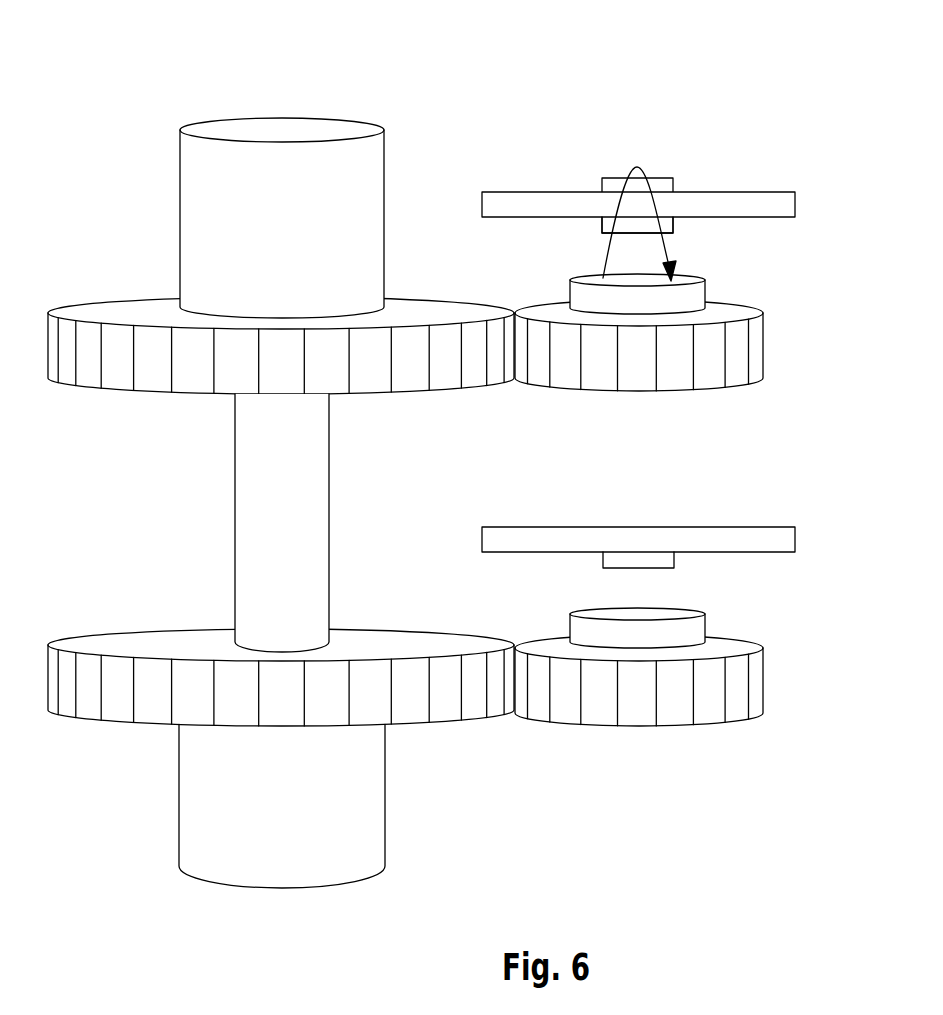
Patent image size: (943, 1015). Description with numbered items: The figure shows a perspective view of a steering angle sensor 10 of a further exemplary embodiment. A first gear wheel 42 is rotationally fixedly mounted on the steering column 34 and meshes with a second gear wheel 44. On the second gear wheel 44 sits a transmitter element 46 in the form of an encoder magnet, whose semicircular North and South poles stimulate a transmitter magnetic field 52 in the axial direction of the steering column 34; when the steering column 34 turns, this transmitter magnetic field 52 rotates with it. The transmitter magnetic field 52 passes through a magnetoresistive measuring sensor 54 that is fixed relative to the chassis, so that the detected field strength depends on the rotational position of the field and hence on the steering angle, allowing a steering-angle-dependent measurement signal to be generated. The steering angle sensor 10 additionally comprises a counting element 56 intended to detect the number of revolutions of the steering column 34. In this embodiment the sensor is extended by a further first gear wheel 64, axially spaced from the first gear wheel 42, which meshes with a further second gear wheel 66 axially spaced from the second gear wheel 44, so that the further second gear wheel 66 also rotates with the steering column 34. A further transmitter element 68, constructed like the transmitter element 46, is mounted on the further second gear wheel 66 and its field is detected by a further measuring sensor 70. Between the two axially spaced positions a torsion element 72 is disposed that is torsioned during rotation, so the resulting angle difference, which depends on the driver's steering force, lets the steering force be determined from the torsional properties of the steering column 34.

The steering angle sensor 10 is at (155, 82).
The steering column 34 is at (195, 180).
The first gear wheel 42 is at (95, 313).
The second gear wheel 44 is at (723, 304).
The transmitter element 46 is at (588, 272).
The transmitter magnetic field 52 is at (670, 243).
The magnetoresistive measuring sensor 54 is at (605, 230).
The counting element 56 is at (665, 177).
The further first gear wheel 64 is at (95, 647).
The further second gear wheel 66 is at (733, 636).
The further transmitter element 68 is at (588, 607).
The further measuring sensor 70 is at (672, 562).
The torsion element 72 is at (250, 505).